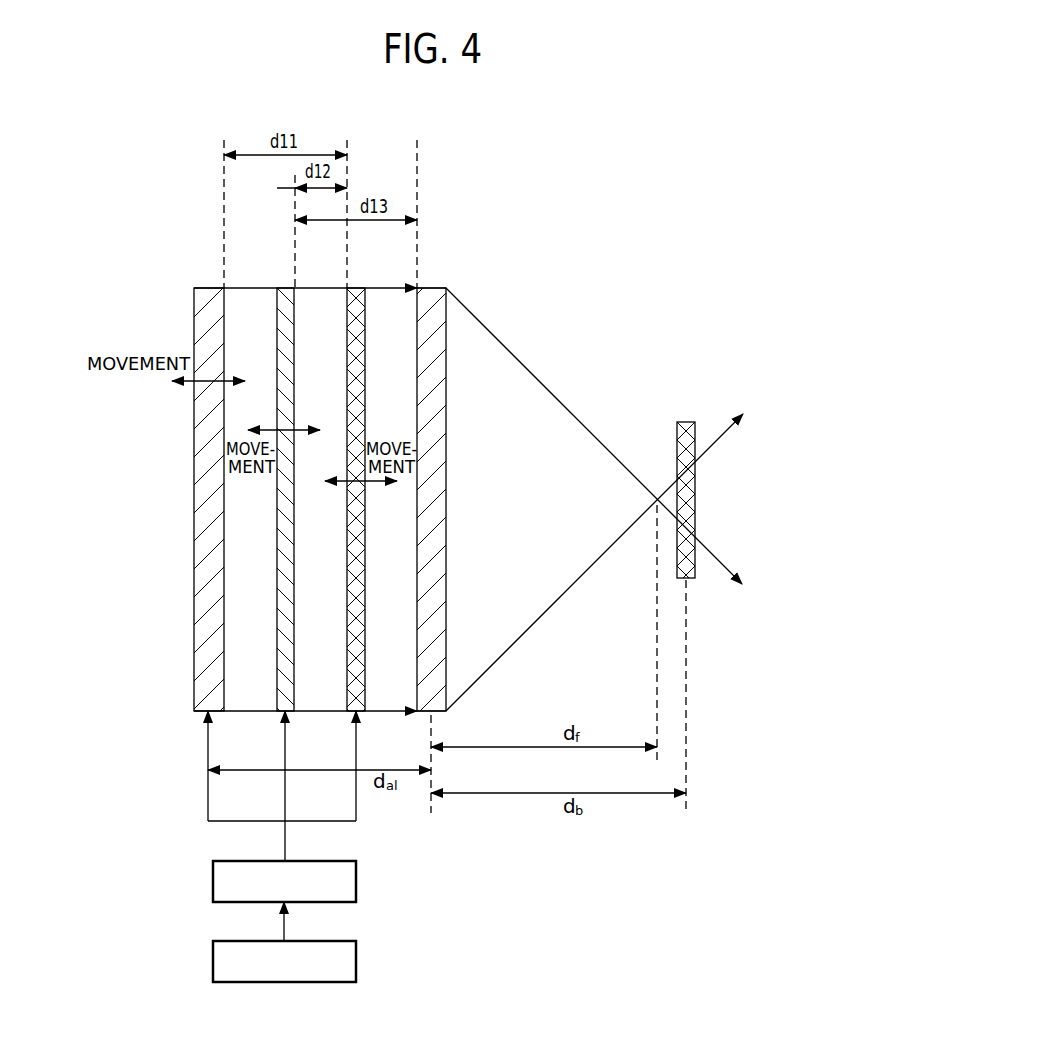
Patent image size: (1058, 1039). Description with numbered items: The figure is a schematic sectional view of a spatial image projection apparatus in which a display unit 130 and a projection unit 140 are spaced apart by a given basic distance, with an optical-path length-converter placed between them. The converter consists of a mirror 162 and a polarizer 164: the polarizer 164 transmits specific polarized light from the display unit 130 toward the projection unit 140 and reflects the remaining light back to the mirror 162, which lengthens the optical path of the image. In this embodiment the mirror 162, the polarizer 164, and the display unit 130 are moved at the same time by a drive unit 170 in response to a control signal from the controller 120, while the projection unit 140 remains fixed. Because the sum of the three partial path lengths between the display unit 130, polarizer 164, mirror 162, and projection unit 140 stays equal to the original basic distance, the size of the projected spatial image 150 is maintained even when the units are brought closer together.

The controller 120 is at (303, 940).
The display unit 130 is at (202, 288).
The projection unit 140 is at (446, 288).
The spatial image 150 is at (686, 421).
The mirror 162 is at (294, 635).
The polarizer 164 is at (366, 635).
The drive unit 170 is at (303, 860).